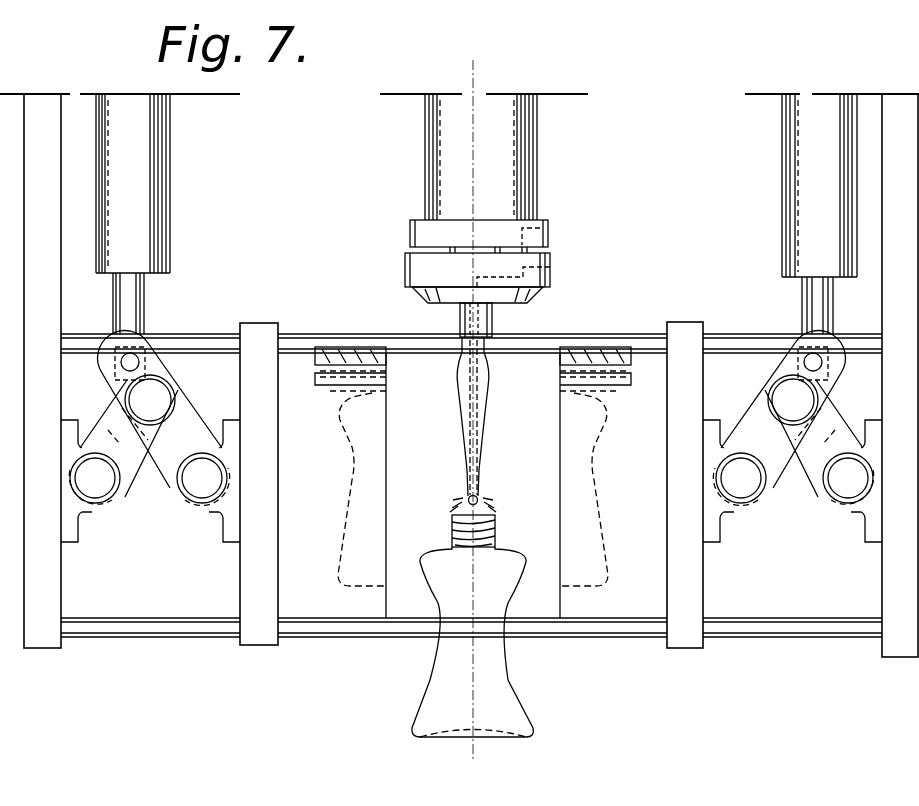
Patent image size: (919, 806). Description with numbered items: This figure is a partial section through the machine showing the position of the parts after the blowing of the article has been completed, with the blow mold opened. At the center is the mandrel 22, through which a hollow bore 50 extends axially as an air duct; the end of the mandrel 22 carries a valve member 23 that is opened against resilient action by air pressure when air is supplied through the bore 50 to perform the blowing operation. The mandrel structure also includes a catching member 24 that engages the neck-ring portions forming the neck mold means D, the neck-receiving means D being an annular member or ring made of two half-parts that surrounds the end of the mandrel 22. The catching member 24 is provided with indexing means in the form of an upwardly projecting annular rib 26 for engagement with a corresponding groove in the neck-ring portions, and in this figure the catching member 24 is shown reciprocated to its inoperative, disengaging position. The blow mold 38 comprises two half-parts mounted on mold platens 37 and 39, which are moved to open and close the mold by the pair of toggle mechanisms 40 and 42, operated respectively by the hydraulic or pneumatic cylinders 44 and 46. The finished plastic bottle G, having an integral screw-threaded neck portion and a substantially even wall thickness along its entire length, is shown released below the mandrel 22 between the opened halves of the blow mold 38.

The mandrel 22 is at (487, 414).
The valve member 23 is at (483, 506).
The catching member 24 is at (545, 270).
The annular rib 26 is at (525, 299).
The mold platen 37 is at (686, 337).
The blow mold 38 is at (653, 365).
The mold platen 39 is at (258, 333).
The toggle mechanism 40 is at (778, 398).
The toggle mechanism 42 is at (166, 396).
The hydraulic or pneumatic cylinder 44 is at (157, 192).
The hydraulic or pneumatic cylinder 46 is at (793, 202).
The hollow bore 50 is at (478, 391).
The neck-receiving means D is at (359, 357).
The plastic bottle G is at (505, 683).